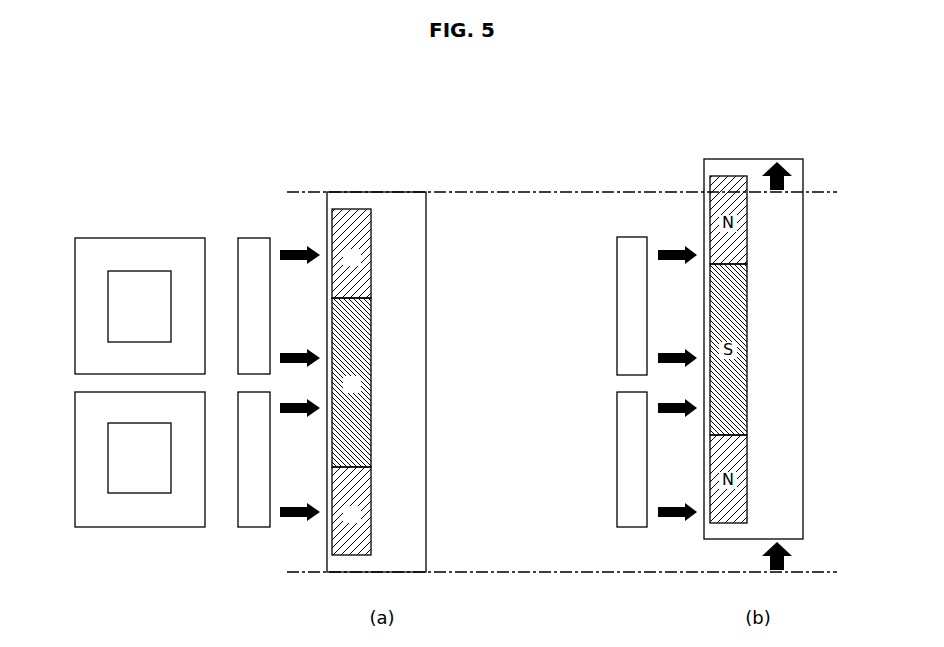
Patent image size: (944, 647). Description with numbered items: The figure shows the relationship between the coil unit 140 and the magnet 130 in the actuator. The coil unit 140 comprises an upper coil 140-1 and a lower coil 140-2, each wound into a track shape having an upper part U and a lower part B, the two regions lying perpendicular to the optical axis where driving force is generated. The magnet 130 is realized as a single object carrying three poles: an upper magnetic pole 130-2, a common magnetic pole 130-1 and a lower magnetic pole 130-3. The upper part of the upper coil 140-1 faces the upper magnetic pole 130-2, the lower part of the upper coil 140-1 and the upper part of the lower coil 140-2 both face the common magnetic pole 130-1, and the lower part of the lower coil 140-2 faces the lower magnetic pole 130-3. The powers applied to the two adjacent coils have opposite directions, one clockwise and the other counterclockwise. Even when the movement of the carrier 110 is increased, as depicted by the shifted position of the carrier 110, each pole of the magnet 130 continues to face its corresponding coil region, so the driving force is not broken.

The carrier 110 is at (399, 194).
The magnet 130 is at (450, 382).
The common magnetic pole 130-1 is at (362, 285).
The upper magnetic pole 130-2 is at (362, 342).
The lower magnetic pole 130-3 is at (415, 500).
The coil unit 140 is at (172, 381).
The upper coil 140-1 is at (238, 252).
The lower coil 140-2 is at (238, 510).